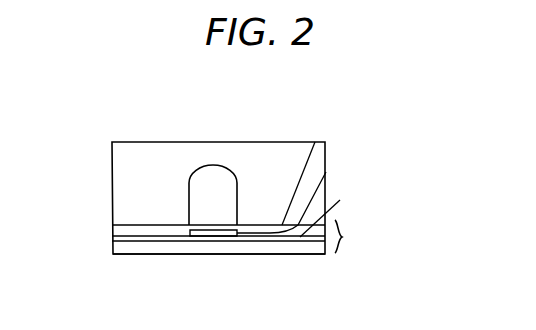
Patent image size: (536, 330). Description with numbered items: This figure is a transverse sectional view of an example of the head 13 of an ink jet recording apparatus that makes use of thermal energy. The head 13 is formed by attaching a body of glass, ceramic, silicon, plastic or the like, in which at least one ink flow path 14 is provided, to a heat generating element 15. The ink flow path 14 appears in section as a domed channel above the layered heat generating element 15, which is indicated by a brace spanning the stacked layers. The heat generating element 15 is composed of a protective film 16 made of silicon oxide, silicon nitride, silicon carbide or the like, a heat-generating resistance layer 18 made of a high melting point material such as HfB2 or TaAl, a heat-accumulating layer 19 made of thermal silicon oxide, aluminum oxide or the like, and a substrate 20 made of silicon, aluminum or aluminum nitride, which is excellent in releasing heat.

The head 13 is at (120, 141).
The ink flow path 14 is at (215, 167).
The heat generating element 15 is at (240, 236).
The protective film 16 is at (315, 142).
The heat-generating resistance layer 18 is at (326, 172).
The heat-accumulating layer 19 is at (340, 200).
The substrate 20 is at (288, 254).